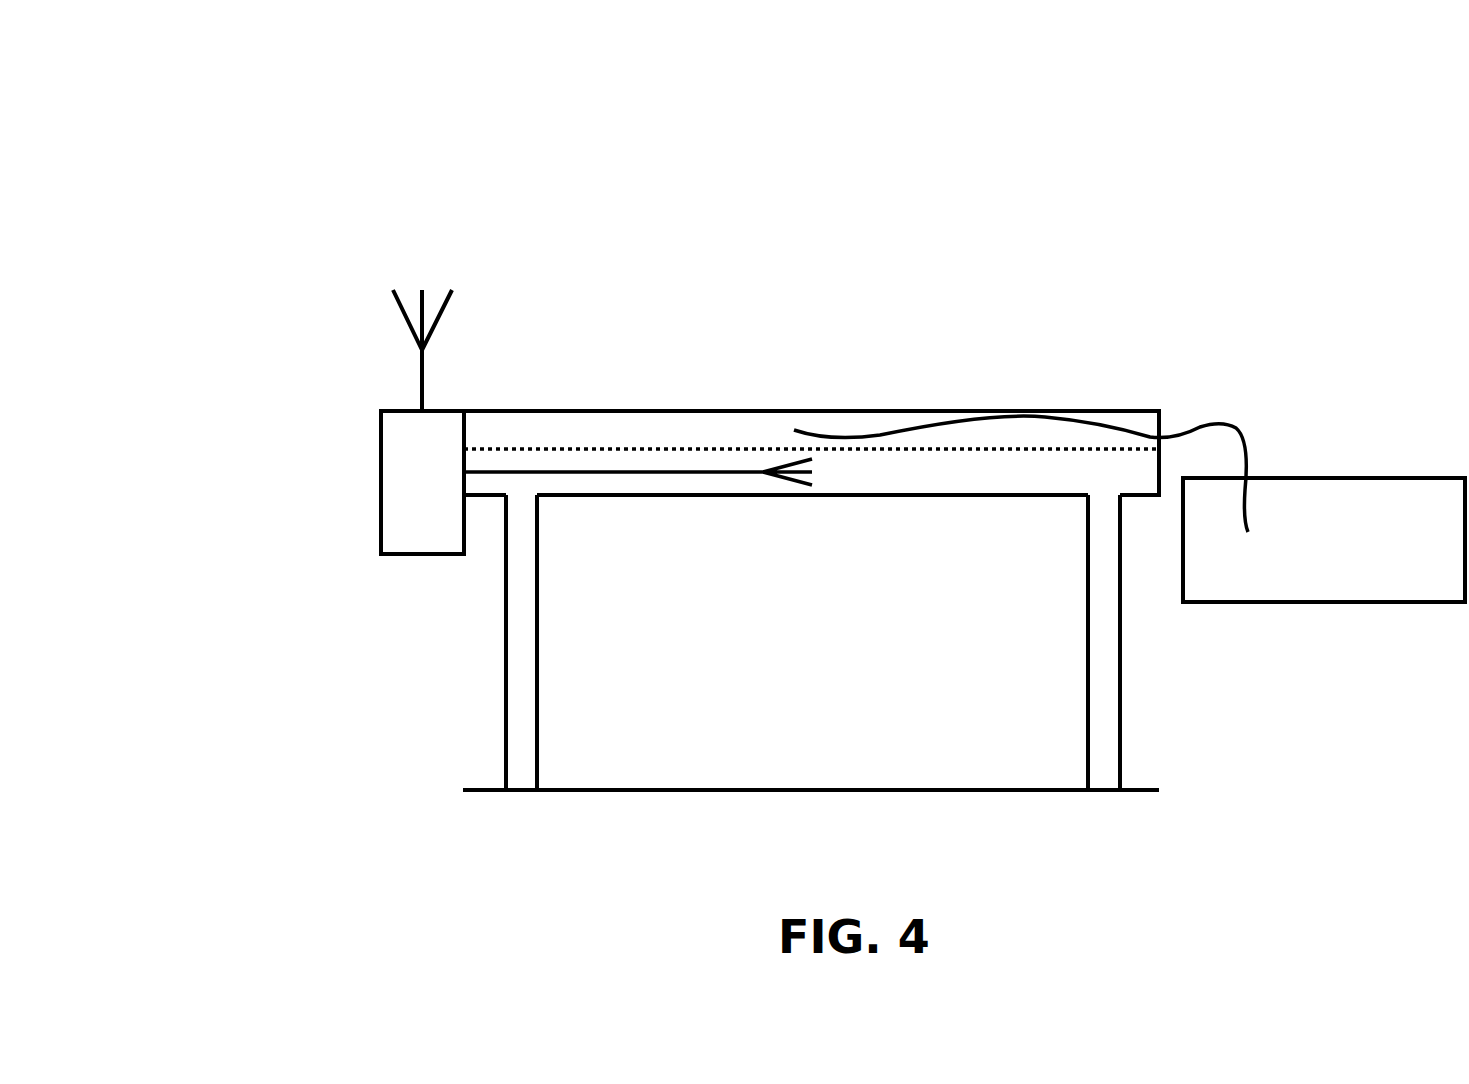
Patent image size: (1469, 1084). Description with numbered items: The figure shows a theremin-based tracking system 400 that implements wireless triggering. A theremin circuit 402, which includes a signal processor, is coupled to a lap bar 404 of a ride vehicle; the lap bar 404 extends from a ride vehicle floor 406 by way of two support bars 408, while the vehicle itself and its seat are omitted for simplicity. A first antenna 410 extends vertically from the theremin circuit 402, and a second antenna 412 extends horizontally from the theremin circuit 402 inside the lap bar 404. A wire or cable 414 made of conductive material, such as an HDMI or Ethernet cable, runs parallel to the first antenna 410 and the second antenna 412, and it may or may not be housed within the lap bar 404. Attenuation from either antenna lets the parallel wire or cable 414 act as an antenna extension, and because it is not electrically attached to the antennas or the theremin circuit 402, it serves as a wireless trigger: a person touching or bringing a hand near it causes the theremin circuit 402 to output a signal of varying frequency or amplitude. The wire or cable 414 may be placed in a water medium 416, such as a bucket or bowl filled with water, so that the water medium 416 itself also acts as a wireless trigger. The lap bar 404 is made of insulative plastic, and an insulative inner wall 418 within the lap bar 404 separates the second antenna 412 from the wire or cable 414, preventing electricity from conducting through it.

The theremin-based tracking system 400 is at (168, 108).
The theremin circuit 402 is at (381, 455).
The lap bar 404 is at (632, 410).
The ride vehicle floor 406 is at (758, 790).
The support bars 408 is at (506, 670).
The first antenna 410 is at (420, 377).
The second antenna 412 is at (660, 474).
The wire or cable 414 is at (1222, 425).
The water medium 416 is at (1362, 477).
The inner wall 418 is at (990, 451).